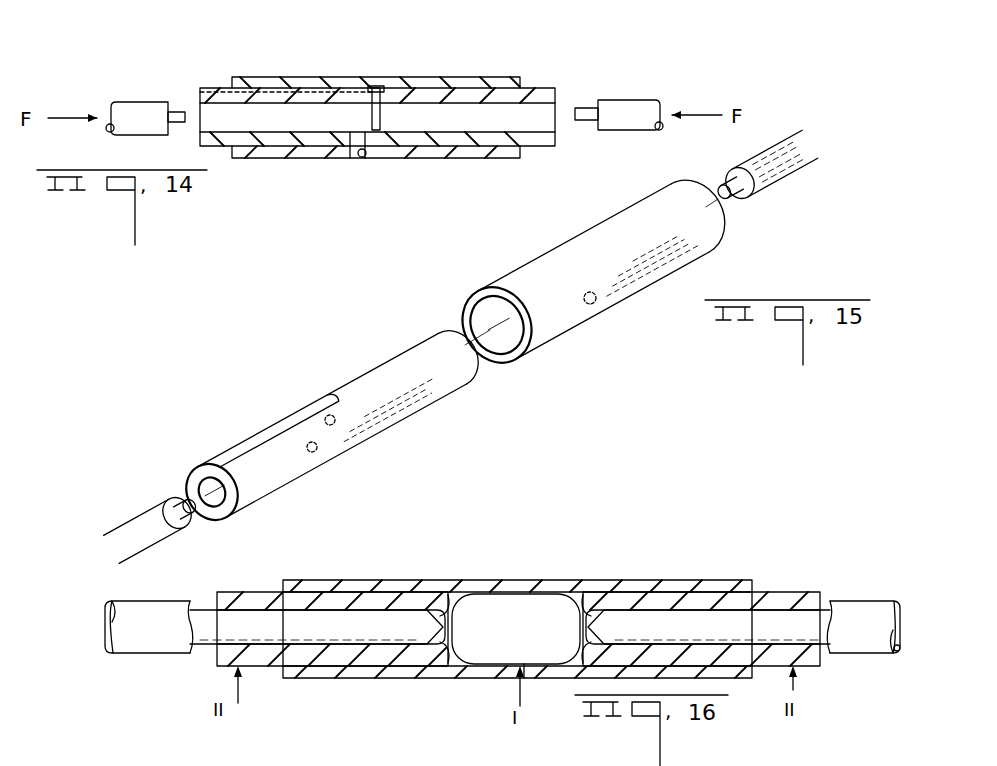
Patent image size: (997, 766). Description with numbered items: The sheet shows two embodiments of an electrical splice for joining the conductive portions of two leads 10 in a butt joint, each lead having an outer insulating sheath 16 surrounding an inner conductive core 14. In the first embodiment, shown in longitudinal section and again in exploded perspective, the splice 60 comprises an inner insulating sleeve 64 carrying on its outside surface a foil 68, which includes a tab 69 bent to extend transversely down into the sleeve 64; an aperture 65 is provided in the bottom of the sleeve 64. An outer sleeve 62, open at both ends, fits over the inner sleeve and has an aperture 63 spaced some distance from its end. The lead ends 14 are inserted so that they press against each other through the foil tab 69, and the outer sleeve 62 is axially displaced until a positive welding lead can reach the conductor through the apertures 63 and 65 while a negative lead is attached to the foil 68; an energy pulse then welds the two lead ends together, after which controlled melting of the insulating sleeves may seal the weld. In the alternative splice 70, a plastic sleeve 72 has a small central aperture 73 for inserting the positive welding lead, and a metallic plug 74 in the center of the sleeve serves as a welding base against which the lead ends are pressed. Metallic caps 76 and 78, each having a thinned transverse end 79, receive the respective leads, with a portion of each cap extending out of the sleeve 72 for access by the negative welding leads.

In FIG. 14, the lead 10 is at (391, 101).
In FIG. 15, the lead 10 is at (454, 322).
In FIG. 16, the lead 10 is at (507, 598).
In FIG. 14, the inner conductive core 14 is at (180, 108).
In FIG. 15, the inner conductive core 14 is at (185, 500).
In FIG. 14, the outer insulating sheath 16 is at (146, 100).
In FIG. 15, the outer insulating sheath 16 is at (148, 518).
In FIG. 16, the outer insulating sheath 16 is at (510, 627).
In FIG. 14, the splice 60 is at (377, 102).
In FIG. 14, the outer sleeve 62 is at (333, 150).
In FIG. 15, the outer sleeve 62 is at (624, 288).
In FIG. 14, the aperture 63 is at (366, 156).
In FIG. 15, the aperture 63 is at (588, 306).
In FIG. 14, the inner insulating sleeve 64 is at (480, 147).
In FIG. 15, the inner insulating sleeve 64 is at (420, 395).
In FIG. 14, the aperture 65 is at (350, 133).
In FIG. 15, the aperture 65 is at (313, 453).
In FIG. 14, the foil 68 is at (270, 85).
In FIG. 15, the foil 68 is at (240, 440).
In FIG. 14, the tab 69 is at (381, 116).
In FIG. 15, the tab 69 is at (337, 426).
In FIG. 16, the splice 70 is at (518, 625).
In FIG. 16, the plastic sleeve 72 is at (458, 679).
In FIG. 16, the aperture 73 is at (526, 666).
In FIG. 16, the metallic plug 74 is at (520, 598).
In FIG. 16, the metallic cap 76 is at (395, 592).
In FIG. 16, the metallic cap 78 is at (714, 590).
In FIG. 16, the thinned transverse end 79 is at (455, 593).